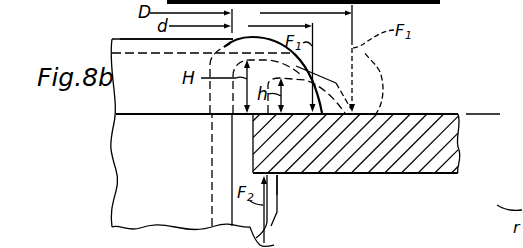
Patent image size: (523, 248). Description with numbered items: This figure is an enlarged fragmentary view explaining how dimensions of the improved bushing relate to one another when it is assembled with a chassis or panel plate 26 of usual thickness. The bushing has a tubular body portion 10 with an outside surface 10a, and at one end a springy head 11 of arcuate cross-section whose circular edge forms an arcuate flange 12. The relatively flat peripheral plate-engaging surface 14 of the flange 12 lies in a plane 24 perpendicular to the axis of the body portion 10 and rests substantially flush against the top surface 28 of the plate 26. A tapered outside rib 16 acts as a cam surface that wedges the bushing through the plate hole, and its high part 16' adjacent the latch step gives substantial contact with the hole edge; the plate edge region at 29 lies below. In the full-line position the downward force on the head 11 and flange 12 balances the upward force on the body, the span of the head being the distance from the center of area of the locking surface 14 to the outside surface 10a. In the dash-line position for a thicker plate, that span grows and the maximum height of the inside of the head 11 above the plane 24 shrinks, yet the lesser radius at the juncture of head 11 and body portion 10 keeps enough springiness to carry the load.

The body portion 10 is at (122, 180).
The outside surface of body portion 10a is at (274, 245).
The head 11 is at (128, 37).
The arcuate flange 12 is at (314, 76).
The plate-engaging surface 14 is at (122, 123).
The rib 16 is at (296, 206).
The high part of cam surface 16' is at (322, 186).
The plane of locking surface 24 is at (470, 113).
The chassis or panel plate 26 is at (459, 138).
The top surface of plate 28 is at (410, 113).
The die bottom 29 is at (395, 174).